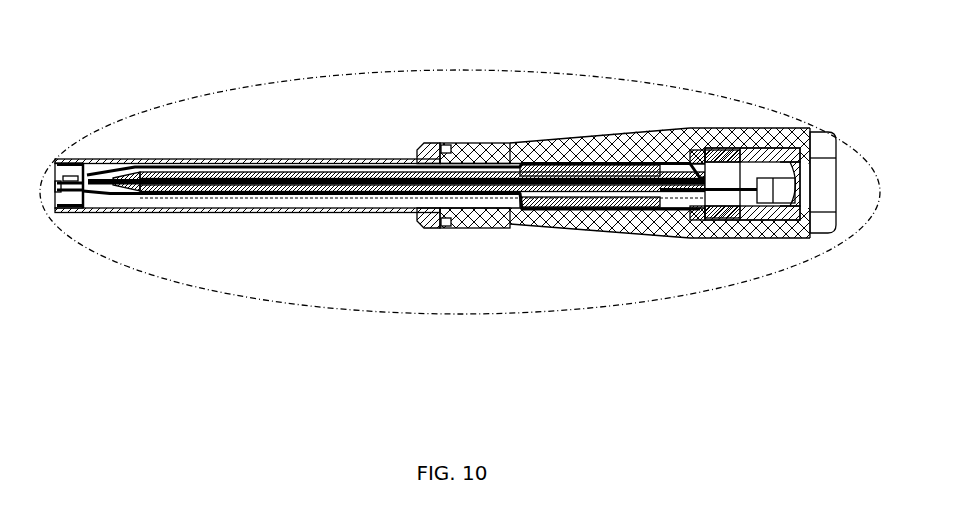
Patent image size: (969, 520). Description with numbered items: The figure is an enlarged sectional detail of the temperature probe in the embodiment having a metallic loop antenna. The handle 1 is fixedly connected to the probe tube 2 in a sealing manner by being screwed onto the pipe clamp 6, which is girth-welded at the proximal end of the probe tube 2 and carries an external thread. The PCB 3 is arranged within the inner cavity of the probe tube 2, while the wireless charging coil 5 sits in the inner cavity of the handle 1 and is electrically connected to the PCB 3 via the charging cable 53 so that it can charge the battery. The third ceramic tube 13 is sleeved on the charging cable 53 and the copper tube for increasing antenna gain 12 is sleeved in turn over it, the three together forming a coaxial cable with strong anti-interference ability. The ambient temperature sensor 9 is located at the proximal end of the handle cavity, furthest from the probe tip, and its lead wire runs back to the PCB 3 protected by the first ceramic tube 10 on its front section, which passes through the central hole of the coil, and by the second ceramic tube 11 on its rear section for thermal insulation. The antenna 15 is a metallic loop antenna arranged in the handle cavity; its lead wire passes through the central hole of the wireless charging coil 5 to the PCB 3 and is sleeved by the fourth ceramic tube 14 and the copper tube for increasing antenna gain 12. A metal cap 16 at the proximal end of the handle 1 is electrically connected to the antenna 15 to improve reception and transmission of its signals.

The handle 1 is at (685, 128).
The probe tube 2 is at (157, 160).
The PCB 3 is at (74, 165).
The wireless charging coil 5 is at (600, 137).
The pipe clamp 6 is at (430, 143).
The ambient temperature sensor 9 is at (782, 222).
The first ceramic tube 10 is at (720, 222).
The second ceramic tube 11 is at (207, 199).
The copper tube for increasing antenna gain 12 is at (122, 172).
The third ceramic tube 13 is at (488, 150).
The fourth ceramic tube 14 is at (220, 177).
The antenna 15 is at (726, 150).
The metal cap 16 is at (803, 130).
The charging cable 53 is at (531, 165).